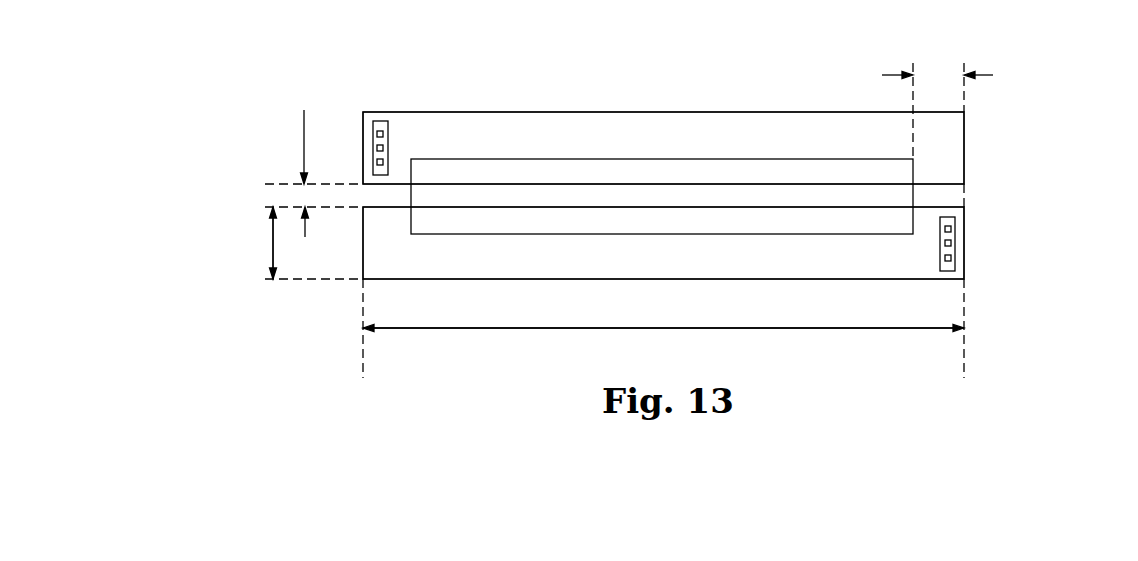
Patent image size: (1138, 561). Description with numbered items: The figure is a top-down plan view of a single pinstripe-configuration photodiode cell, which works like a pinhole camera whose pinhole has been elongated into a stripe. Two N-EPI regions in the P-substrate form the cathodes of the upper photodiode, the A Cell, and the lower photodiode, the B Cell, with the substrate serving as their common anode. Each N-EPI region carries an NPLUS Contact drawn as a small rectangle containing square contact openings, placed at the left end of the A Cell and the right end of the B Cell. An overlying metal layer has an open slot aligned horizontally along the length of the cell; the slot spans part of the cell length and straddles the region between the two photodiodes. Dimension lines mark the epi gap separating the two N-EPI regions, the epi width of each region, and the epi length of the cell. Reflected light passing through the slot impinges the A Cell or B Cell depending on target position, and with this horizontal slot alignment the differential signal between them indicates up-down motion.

The photodiode cell A A Cell is at (737, 148).
The photodiode cell B B Cell is at (737, 243).
The open slot is at (654, 149).
The N-plus contact NPLUS Contact is at (396, 116).
The element epi gap is at (308, 159).
The element epi width is at (232, 243).
The element epi length is at (663, 340).